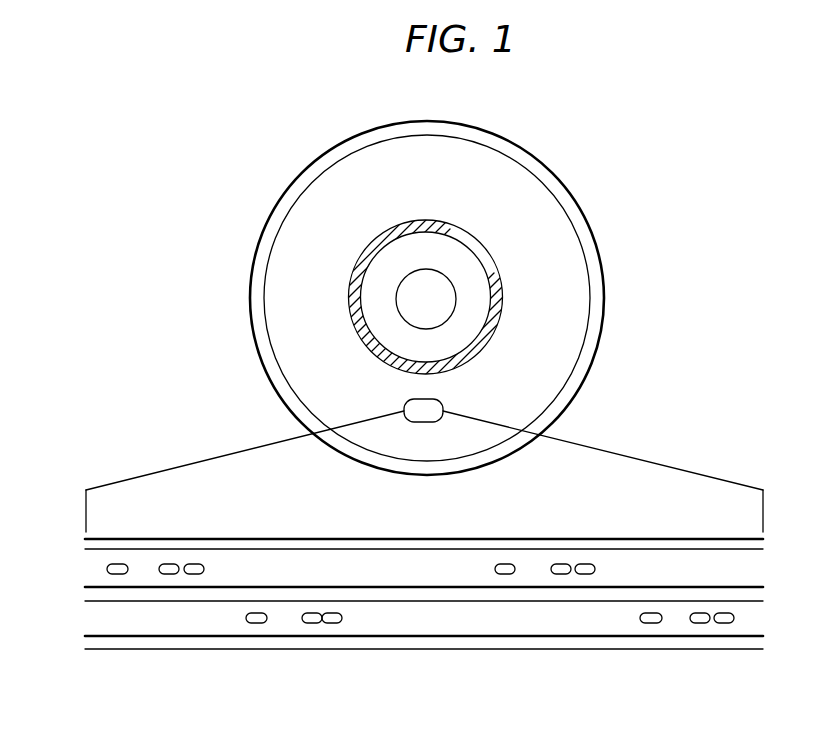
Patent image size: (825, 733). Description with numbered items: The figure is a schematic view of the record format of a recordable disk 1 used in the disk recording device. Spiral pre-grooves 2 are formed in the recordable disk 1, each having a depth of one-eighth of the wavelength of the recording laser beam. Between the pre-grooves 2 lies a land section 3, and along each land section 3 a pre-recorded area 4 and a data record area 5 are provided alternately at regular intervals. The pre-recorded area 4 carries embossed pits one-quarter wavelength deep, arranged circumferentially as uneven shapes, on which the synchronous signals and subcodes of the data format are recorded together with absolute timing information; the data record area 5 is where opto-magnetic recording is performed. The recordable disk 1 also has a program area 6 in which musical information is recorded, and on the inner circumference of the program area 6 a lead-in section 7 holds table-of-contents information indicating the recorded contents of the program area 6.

The recordable disk 1 is at (598, 230).
The spiral pre-grooves 2 is at (756, 637).
The land section 3 is at (617, 607).
The pre-recorded area 4 is at (122, 563).
The data record area 5 is at (321, 562).
The program area 6 is at (499, 199).
The lead-in section 7 is at (498, 302).